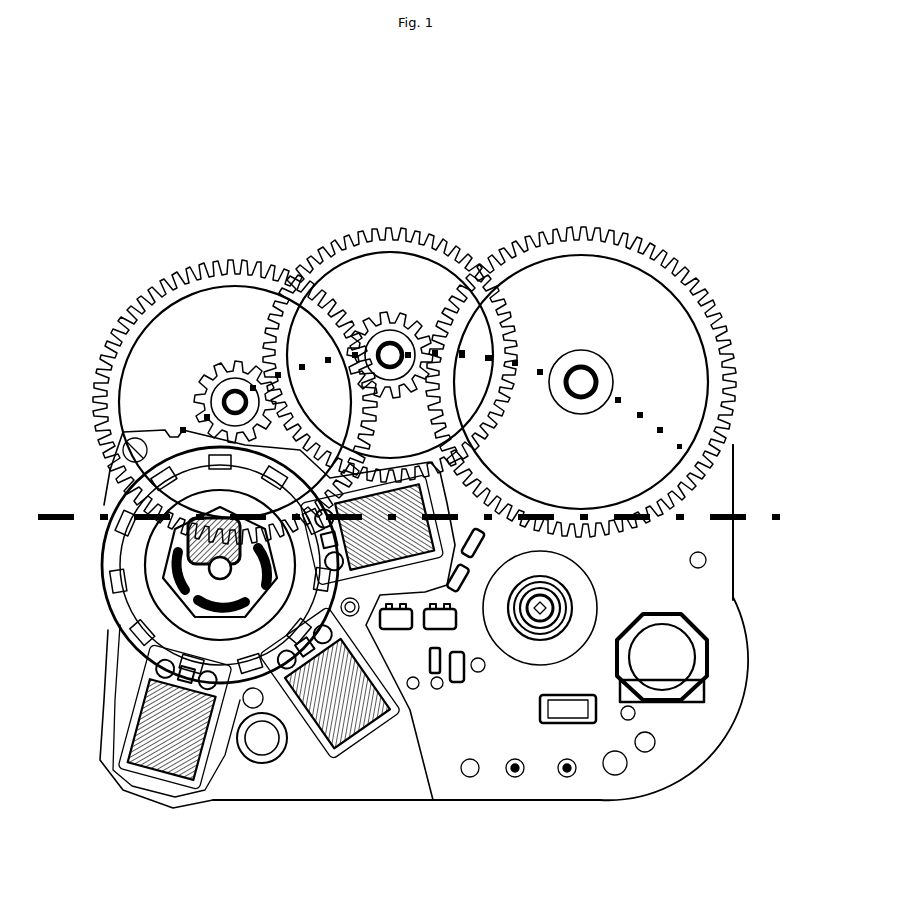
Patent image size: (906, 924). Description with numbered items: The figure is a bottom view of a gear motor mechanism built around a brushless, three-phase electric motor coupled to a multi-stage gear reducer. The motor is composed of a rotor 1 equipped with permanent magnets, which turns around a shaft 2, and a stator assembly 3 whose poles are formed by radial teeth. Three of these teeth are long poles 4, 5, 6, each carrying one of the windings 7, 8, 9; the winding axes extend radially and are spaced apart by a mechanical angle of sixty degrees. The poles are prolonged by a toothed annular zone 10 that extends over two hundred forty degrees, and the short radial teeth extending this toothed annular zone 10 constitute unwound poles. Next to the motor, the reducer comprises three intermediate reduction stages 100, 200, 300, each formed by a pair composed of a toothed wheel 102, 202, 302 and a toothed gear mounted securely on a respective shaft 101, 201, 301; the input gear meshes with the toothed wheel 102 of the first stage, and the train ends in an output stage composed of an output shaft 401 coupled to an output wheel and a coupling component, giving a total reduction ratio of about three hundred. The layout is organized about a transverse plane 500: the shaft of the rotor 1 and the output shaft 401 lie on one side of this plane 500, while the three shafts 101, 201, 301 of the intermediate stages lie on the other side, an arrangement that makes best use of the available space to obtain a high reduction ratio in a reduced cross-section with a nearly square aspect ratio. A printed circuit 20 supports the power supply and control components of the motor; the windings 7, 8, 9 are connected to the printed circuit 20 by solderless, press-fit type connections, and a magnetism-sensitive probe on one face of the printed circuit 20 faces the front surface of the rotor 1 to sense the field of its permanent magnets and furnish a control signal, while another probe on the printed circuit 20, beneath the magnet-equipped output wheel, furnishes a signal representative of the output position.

The rotor 1 is at (165, 592).
The shaft 2 is at (193, 523).
The stator assembly 3 is at (93, 650).
The long pole 4 is at (187, 803).
The long pole 5 is at (380, 628).
The long pole 6 is at (445, 575).
The winding 7 is at (143, 773).
The winding 8 is at (327, 748).
The winding 9 is at (405, 575).
The toothed annular zone 10 is at (100, 573).
The printed circuit 20 is at (533, 783).
The intermediate reduction stage 100 is at (152, 228).
The shaft 101 is at (220, 367).
The toothed wheel 102 is at (157, 400).
The intermediate reduction stage 200 is at (350, 228).
The shaft 201 is at (390, 353).
The toothed wheel 202 is at (327, 273).
The intermediate reduction stage 300 is at (565, 223).
The shaft 301 is at (580, 380).
The toothed wheel 302 is at (605, 280).
The output shaft 401 is at (540, 622).
The transverse plane 500 is at (692, 520).